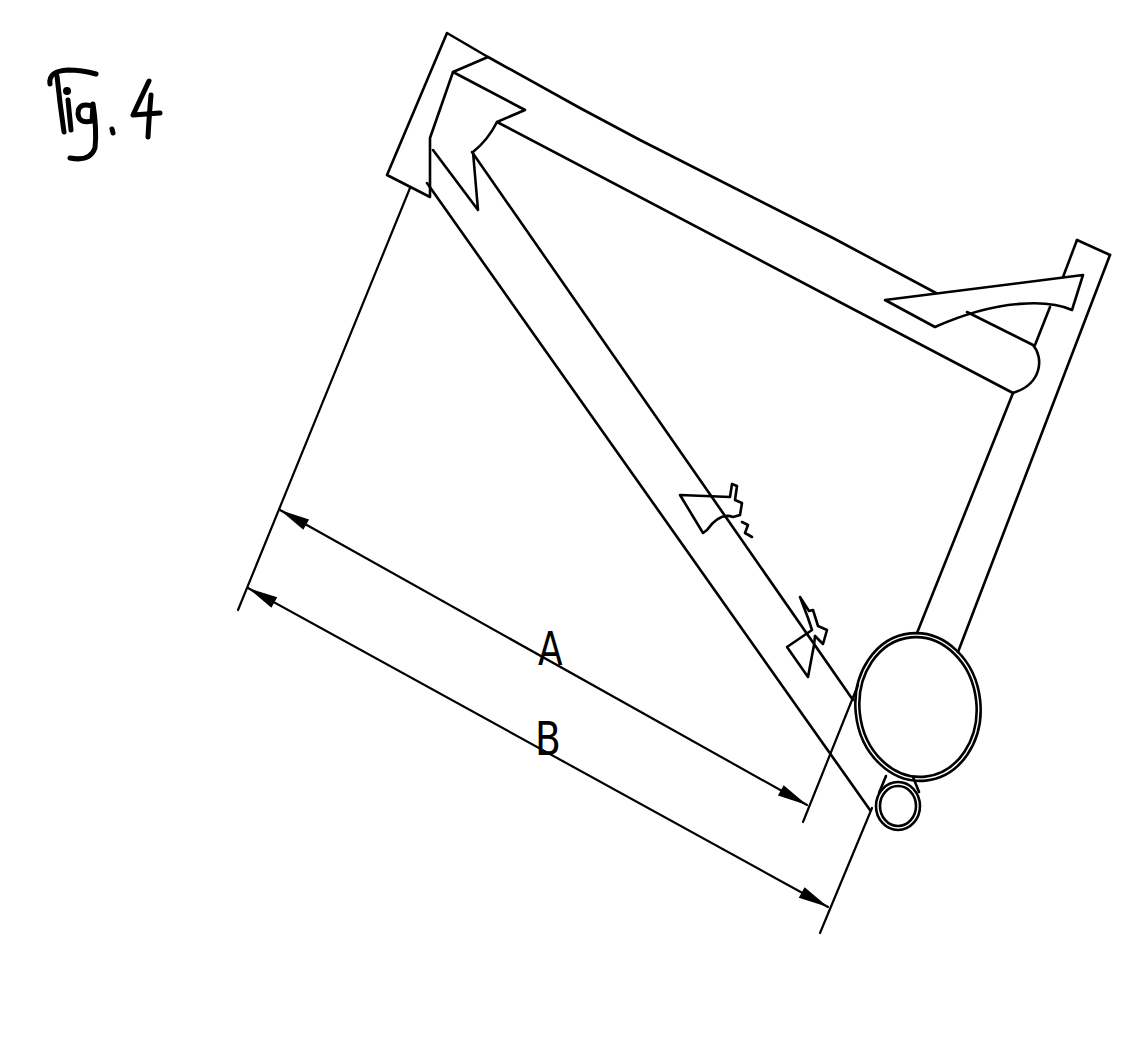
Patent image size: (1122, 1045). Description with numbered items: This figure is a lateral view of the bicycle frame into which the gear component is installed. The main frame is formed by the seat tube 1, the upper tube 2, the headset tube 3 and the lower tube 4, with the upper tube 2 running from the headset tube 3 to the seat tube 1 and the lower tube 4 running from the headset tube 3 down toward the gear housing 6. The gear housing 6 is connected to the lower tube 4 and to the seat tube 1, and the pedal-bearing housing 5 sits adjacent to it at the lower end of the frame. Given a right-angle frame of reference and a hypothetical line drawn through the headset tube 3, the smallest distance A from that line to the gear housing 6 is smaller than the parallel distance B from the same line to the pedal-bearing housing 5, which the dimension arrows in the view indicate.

The seat tube 1 is at (1003, 493).
The upper tube 2 is at (755, 220).
The headset tube 3 is at (421, 112).
The lower tube 4 is at (608, 410).
The pedal-bearing housing 5 is at (918, 815).
The gear housing 6 is at (970, 668).